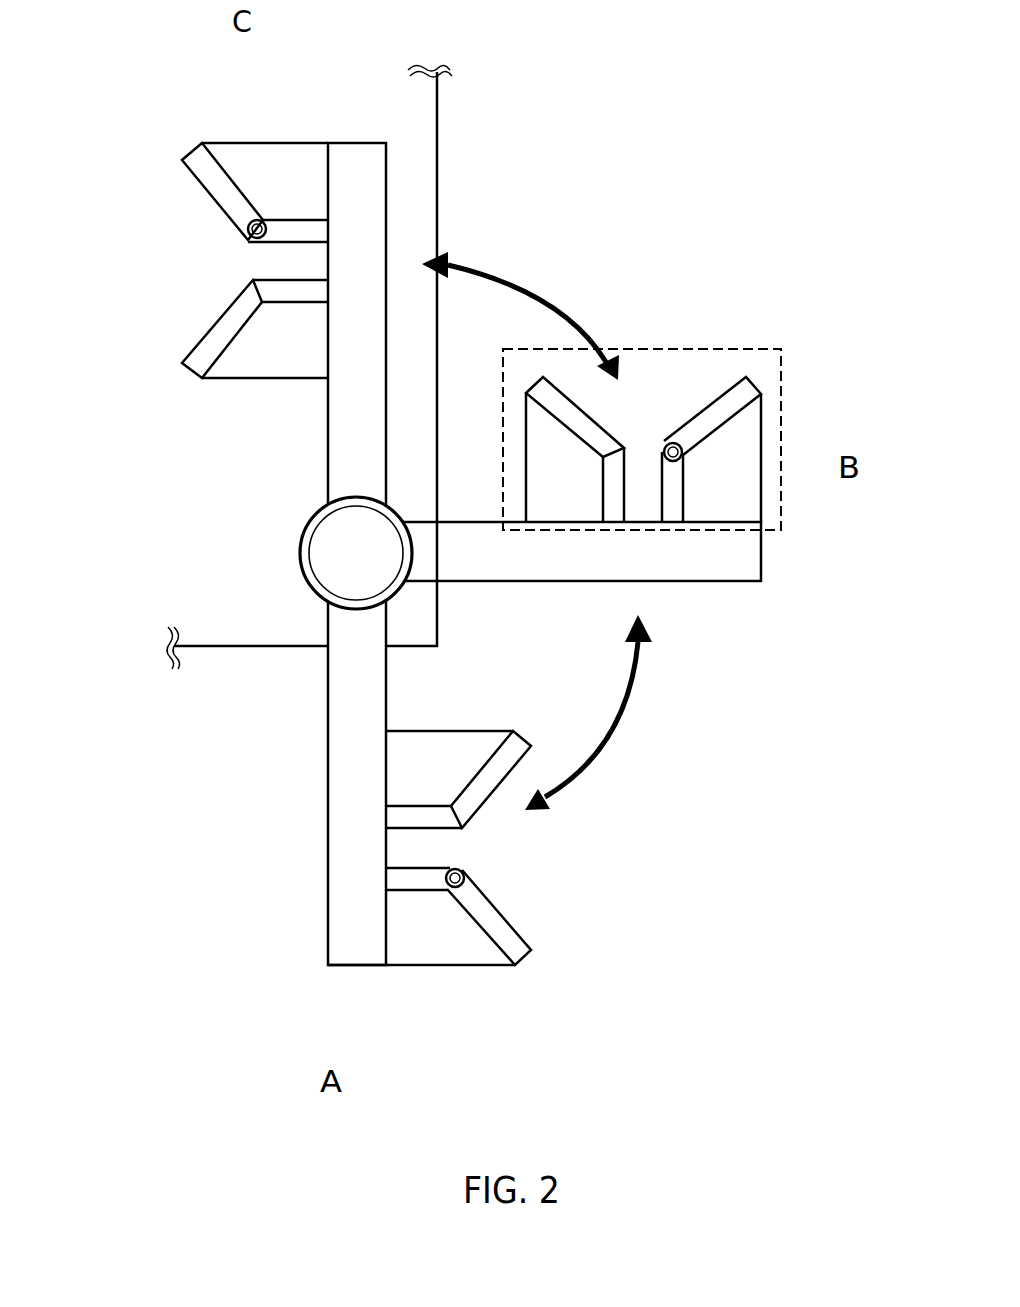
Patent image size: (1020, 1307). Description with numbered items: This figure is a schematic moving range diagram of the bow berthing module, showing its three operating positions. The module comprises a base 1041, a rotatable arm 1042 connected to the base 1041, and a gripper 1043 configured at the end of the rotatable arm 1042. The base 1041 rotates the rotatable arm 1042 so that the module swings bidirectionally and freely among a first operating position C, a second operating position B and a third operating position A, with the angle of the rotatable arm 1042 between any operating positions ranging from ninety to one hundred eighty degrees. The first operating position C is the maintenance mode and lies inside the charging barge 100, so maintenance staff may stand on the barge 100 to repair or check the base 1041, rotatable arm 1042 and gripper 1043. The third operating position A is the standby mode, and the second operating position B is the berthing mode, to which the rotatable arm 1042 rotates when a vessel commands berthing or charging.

The charging barge 100 is at (356, 554).
The base 1041 is at (350, 551).
The rotatable arm 1042 is at (573, 560).
The gripper 1043 is at (707, 348).